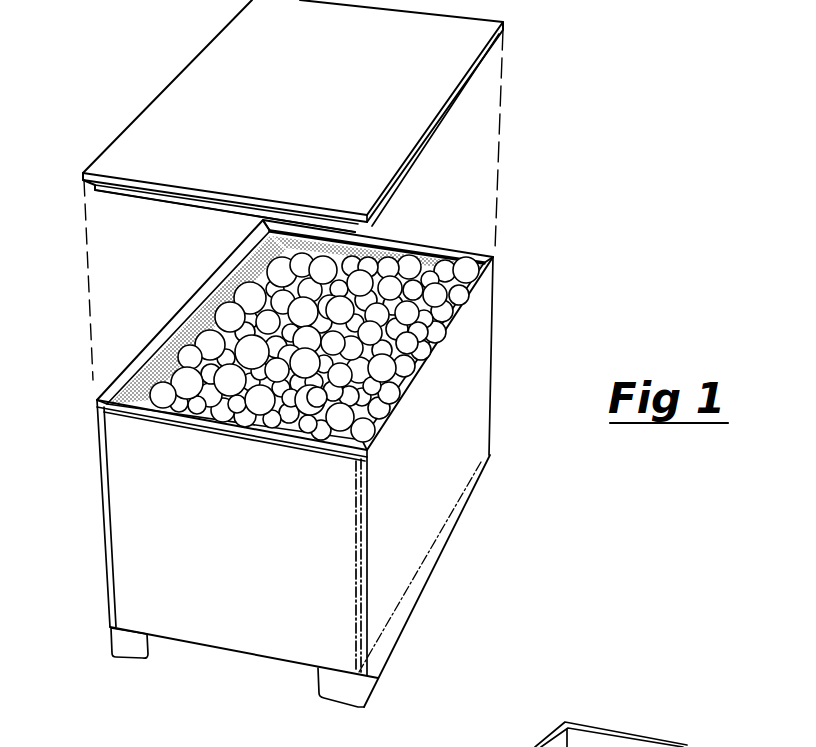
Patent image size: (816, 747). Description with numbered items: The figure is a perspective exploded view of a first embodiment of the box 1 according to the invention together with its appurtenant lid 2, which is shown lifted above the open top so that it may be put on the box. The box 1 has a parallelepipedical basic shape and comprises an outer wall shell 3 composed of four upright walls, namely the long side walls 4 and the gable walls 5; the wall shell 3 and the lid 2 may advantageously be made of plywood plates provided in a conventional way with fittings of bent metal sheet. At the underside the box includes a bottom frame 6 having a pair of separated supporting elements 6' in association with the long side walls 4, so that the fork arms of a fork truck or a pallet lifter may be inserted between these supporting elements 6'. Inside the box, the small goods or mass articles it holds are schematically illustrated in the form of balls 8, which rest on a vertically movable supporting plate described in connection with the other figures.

The box 1 is at (514, 288).
The lid 2 is at (177, 78).
The outer wall shell 3 is at (102, 492).
The long side wall 4 is at (433, 507).
The gable wall 5 is at (246, 633).
The bottom frame 6 is at (92, 646).
The supporting element 6' is at (301, 658).
The balls 8 is at (383, 372).